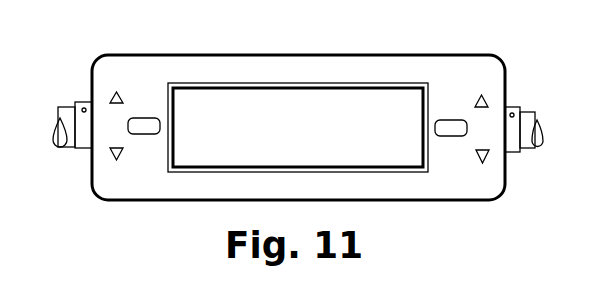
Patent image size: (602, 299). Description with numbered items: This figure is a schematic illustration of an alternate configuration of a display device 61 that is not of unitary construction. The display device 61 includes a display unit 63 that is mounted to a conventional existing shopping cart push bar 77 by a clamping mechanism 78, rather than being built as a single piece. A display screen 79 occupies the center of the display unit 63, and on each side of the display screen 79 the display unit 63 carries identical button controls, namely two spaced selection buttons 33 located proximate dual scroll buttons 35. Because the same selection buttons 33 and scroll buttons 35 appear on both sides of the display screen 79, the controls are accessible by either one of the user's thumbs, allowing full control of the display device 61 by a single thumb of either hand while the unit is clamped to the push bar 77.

The display device 61 is at (298, 132).
The display unit 63 is at (448, 70).
The display screen 79 is at (358, 82).
The selection buttons 33 is at (144, 134).
The scroll buttons 35 is at (111, 96).
The shopping cart push bar 77 is at (62, 108).
The clamping mechanism 78 is at (60, 148).